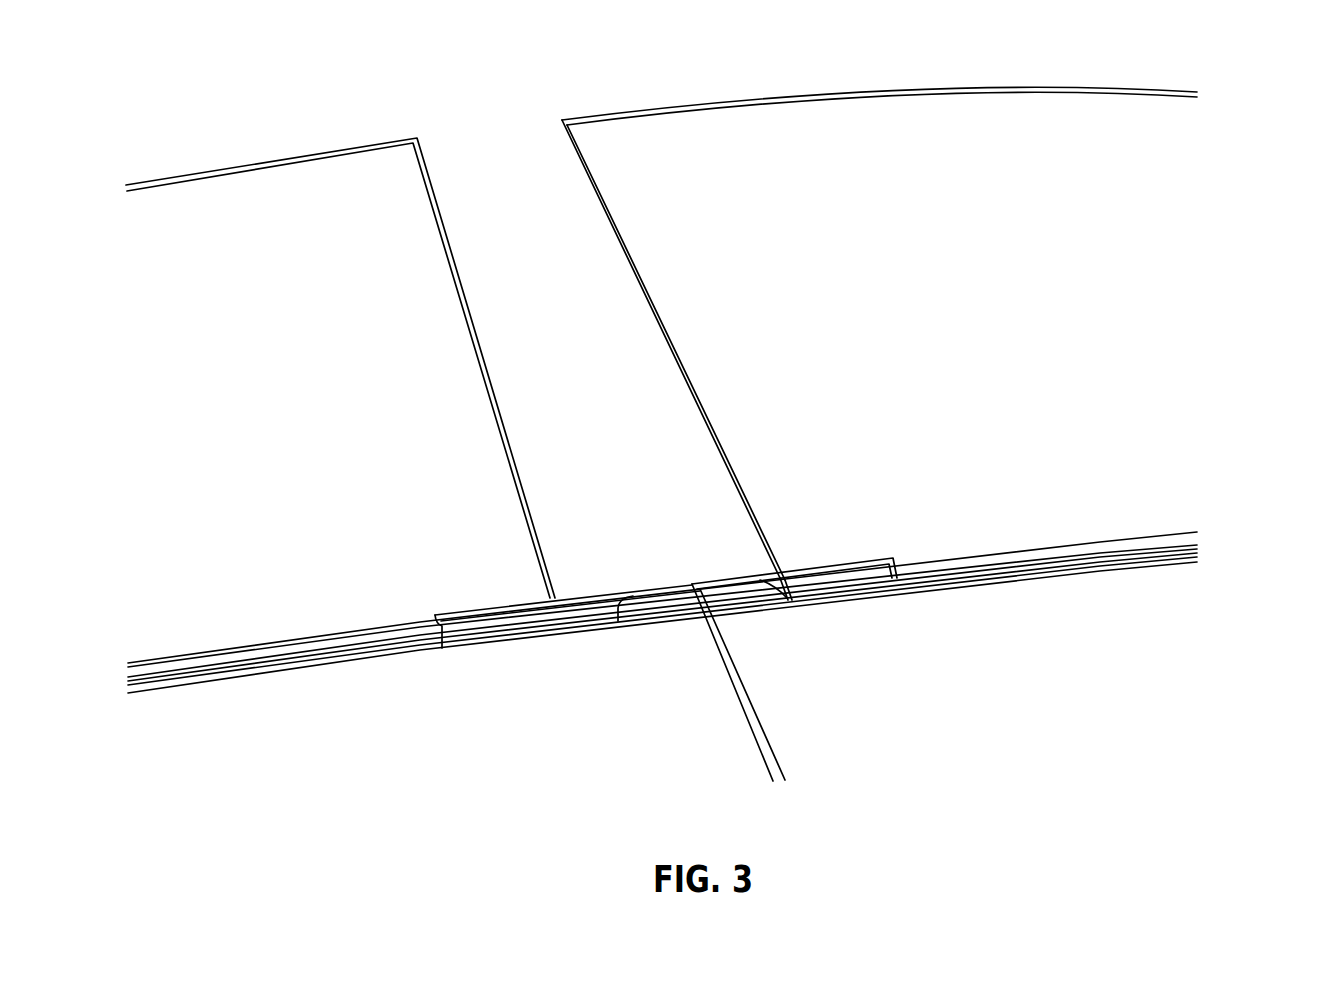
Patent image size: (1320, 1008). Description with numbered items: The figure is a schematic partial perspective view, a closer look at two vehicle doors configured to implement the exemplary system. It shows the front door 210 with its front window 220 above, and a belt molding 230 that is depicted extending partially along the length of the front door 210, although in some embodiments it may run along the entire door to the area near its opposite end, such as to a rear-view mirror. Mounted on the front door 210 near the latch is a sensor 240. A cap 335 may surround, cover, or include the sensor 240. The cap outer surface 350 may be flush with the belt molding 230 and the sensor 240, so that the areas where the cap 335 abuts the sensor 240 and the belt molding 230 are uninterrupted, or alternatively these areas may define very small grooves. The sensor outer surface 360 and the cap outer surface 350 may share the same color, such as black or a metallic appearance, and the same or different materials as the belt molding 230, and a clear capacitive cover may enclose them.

The front door 210 is at (1118, 677).
The front window 220 is at (938, 181).
The belt molding 230 is at (858, 582).
The sensor 240 is at (737, 597).
The cap 335 is at (781, 573).
The cap outer surface 350 is at (790, 598).
The sensor outer surface 360 is at (727, 593).